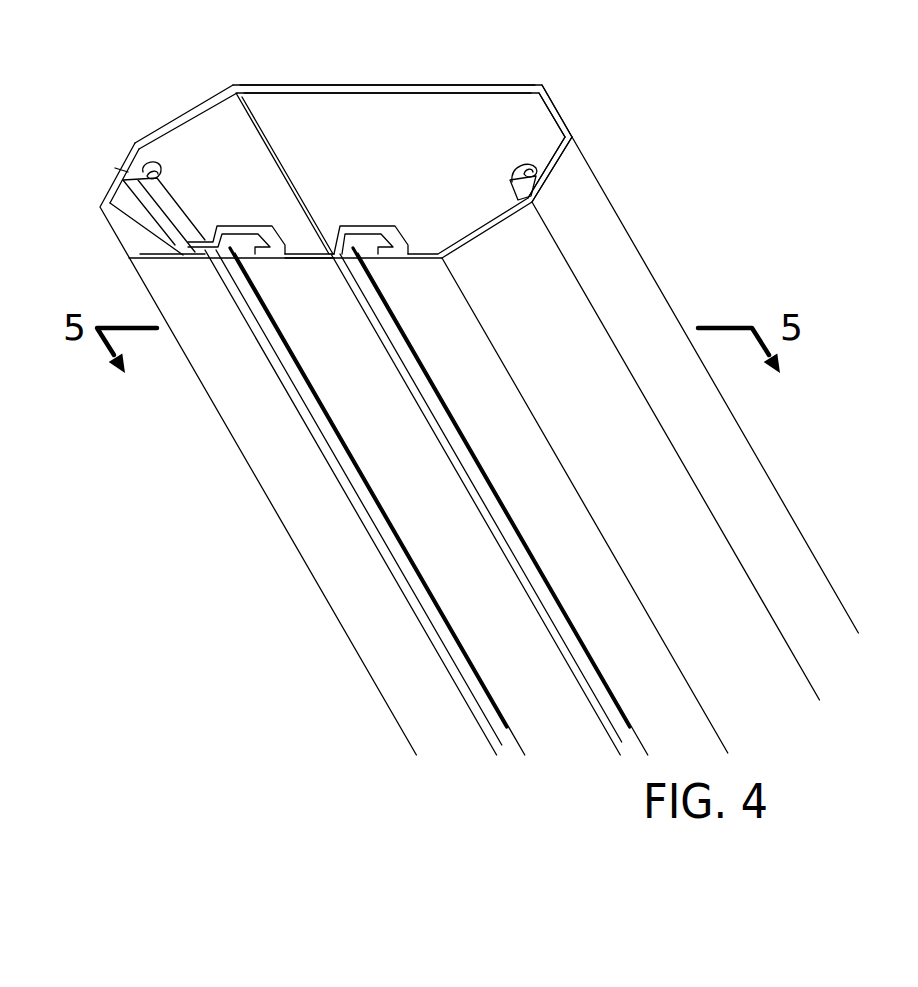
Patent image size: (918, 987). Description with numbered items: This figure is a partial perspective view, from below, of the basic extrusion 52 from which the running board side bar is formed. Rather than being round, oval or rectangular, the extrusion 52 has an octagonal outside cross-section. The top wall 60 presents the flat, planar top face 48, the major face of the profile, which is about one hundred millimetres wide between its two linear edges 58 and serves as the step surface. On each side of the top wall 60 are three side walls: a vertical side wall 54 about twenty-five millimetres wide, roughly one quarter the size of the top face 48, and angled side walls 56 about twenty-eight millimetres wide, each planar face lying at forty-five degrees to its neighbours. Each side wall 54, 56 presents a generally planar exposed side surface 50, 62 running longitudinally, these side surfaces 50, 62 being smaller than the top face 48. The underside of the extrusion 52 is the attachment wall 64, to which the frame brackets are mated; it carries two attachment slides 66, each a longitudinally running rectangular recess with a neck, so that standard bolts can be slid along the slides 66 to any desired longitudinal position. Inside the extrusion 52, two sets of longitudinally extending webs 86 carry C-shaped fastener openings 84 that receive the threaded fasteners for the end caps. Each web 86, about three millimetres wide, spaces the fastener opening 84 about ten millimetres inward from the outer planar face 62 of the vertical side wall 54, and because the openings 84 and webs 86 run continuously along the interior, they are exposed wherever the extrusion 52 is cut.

The top face 48 is at (420, 85).
The side surface 50 is at (181, 115).
The extrusion 52 is at (676, 145).
The vertical side wall 54 is at (761, 523).
The angled side wall 56 is at (553, 330).
The edge of top face 58 is at (230, 85).
The top wall 60 is at (327, 86).
The side surface 62 is at (120, 173).
The attachment wall 64 is at (452, 577).
The attachment slide 66 is at (355, 483).
The fastener opening 84 is at (517, 167).
The web 86 is at (537, 170).